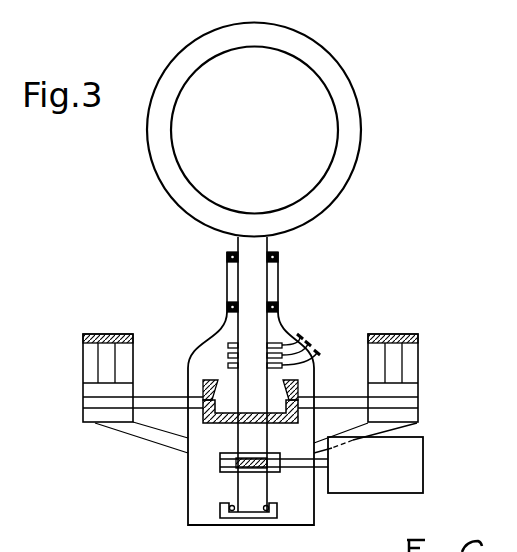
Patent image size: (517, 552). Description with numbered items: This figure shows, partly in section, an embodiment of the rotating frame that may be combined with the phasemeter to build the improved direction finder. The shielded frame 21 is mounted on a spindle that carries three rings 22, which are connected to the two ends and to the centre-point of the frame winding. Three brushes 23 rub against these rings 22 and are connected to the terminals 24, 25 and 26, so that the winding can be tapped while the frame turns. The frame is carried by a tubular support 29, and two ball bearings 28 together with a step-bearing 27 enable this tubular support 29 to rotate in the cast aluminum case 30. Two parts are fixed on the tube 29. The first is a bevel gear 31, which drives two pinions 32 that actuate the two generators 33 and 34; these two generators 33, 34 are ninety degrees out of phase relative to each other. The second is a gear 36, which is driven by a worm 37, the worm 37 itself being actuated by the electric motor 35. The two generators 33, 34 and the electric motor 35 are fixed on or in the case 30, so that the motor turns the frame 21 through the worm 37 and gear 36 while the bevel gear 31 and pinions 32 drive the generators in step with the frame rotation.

The shielded frame 21 is at (358, 114).
The rings 22 is at (228, 365).
The brushes 23 is at (286, 374).
The terminal 24 is at (304, 336).
The terminal 25 is at (311, 344).
The terminal 26 is at (319, 355).
The step-bearing 27 is at (262, 518).
The ball bearings 28 is at (311, 297).
The tubular support 29 is at (250, 327).
The cast aluminum case 30 is at (188, 497).
The bevel gear 31 is at (276, 418).
The pinions 32 is at (250, 387).
The generator 33 is at (395, 368).
The generator 34 is at (92, 370).
The electric motor 35 is at (375, 465).
The gear 36 is at (227, 469).
The worm 37 is at (257, 465).